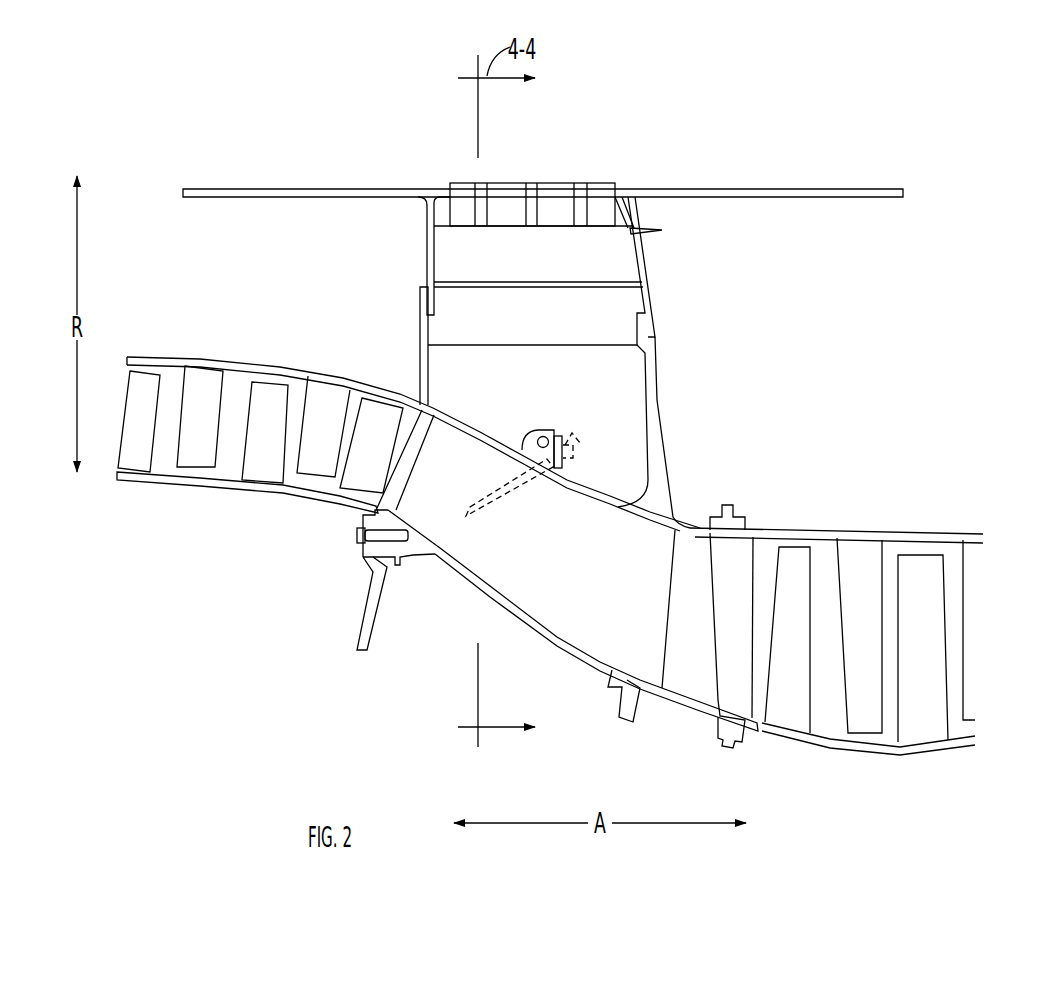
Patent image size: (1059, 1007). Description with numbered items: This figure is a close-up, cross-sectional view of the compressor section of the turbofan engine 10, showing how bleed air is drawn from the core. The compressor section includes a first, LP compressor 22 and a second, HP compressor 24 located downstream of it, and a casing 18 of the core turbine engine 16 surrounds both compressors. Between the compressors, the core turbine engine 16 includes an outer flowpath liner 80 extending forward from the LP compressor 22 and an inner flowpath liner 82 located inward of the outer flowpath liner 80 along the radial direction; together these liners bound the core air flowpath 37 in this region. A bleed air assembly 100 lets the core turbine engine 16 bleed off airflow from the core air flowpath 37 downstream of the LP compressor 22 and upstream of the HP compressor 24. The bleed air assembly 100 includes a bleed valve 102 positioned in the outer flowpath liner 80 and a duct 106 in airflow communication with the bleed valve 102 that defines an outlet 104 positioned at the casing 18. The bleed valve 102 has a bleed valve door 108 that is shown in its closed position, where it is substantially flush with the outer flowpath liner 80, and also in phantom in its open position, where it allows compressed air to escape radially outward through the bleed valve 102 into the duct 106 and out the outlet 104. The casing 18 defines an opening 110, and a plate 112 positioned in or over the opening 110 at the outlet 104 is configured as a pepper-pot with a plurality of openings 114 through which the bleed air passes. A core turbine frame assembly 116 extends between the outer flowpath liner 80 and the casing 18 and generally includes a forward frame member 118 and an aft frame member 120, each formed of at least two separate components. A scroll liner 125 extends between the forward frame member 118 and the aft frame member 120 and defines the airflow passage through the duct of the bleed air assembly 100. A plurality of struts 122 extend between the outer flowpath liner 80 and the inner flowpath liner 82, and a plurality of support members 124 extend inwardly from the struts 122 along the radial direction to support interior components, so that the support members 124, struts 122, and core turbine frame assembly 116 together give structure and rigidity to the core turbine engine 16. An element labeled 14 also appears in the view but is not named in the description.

The turbofan engine 10 is at (780, 128).
The engine centerline axis 14 is at (12, 605).
The core turbine engine 16 is at (722, 140).
The casing 18 is at (300, 188).
The LP compressor 22 is at (203, 340).
The HP compressor 24 is at (895, 490).
The core air flowpath 37 is at (650, 547).
The outer flowpath liner 80 is at (603, 488).
The inner flowpath liner 82 is at (557, 640).
The bleed air assembly 100 is at (705, 328).
The bleed valve 102 is at (528, 418).
The outlet 104 is at (568, 165).
The duct 106 is at (603, 302).
The bleed valve door 108 is at (473, 428).
The opening 110 is at (462, 185).
The plate 112 is at (612, 182).
The openings 114 is at (532, 175).
The core turbine frame assembly 116 is at (683, 376).
The forward frame member 118 is at (420, 303).
The aft frame member 120 is at (653, 380).
The struts 122 is at (612, 612).
The support members 124 is at (360, 620).
The scroll liner 125 is at (645, 230).